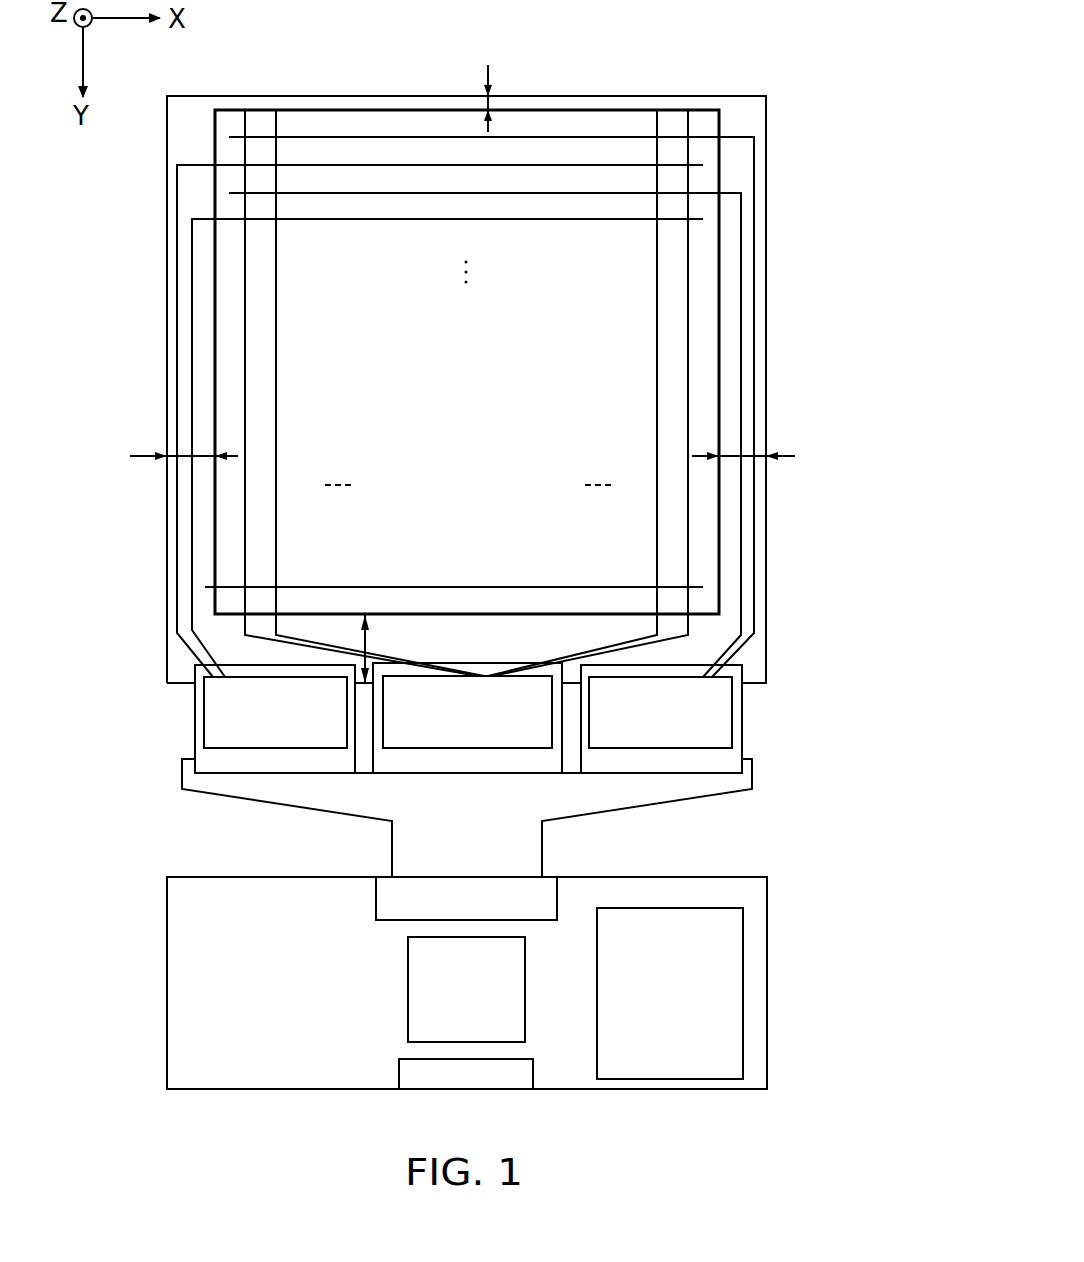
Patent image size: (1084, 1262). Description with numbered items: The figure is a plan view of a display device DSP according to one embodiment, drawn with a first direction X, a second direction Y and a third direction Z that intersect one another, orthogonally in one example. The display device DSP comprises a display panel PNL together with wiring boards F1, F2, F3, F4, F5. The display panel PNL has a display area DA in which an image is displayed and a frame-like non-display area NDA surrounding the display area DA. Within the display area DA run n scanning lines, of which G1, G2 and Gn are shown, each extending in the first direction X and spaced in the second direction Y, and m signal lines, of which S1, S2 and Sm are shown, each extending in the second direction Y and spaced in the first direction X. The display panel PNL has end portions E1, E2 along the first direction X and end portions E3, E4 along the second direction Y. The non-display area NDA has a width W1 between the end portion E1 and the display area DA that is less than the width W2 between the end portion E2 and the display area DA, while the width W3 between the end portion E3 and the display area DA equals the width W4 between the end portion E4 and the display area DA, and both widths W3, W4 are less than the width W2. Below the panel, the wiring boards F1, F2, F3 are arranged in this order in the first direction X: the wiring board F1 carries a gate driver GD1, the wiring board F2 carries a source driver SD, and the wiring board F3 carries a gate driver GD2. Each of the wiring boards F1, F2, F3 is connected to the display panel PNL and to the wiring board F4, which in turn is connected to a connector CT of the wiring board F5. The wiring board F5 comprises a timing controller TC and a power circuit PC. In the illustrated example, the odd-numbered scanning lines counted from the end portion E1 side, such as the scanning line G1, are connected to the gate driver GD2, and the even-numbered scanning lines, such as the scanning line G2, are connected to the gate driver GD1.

The display device DSP is at (845, 104).
The display panel PNL is at (766, 94).
The display area DA is at (712, 321).
The non-display area NDA is at (768, 651).
The end portion E1 is at (596, 96).
The end portion E2 is at (365, 683).
The end portion E3 is at (167, 403).
The end portion E4 is at (766, 387).
The width W1 is at (490, 103).
The width W2 is at (366, 638).
The width W3 is at (190, 458).
The width W4 is at (745, 460).
The signal line S1 is at (243, 128).
The signal line S2 is at (278, 128).
The signal line Sm is at (688, 128).
The scanning line G1 is at (350, 137).
The scanning line G2 is at (397, 167).
The scanning line Gn is at (440, 587).
The wiring board F1 is at (195, 703).
The wiring board F2 is at (552, 773).
The wiring board F3 is at (742, 702).
The wiring board F4 is at (182, 777).
The wiring board F5 is at (167, 993).
The gate driver GD1 is at (204, 740).
The gate driver GD2 is at (732, 740).
The source driver SD is at (515, 748).
The connector CT is at (376, 905).
The timing controller TC is at (408, 995).
The power circuit PC is at (743, 990).